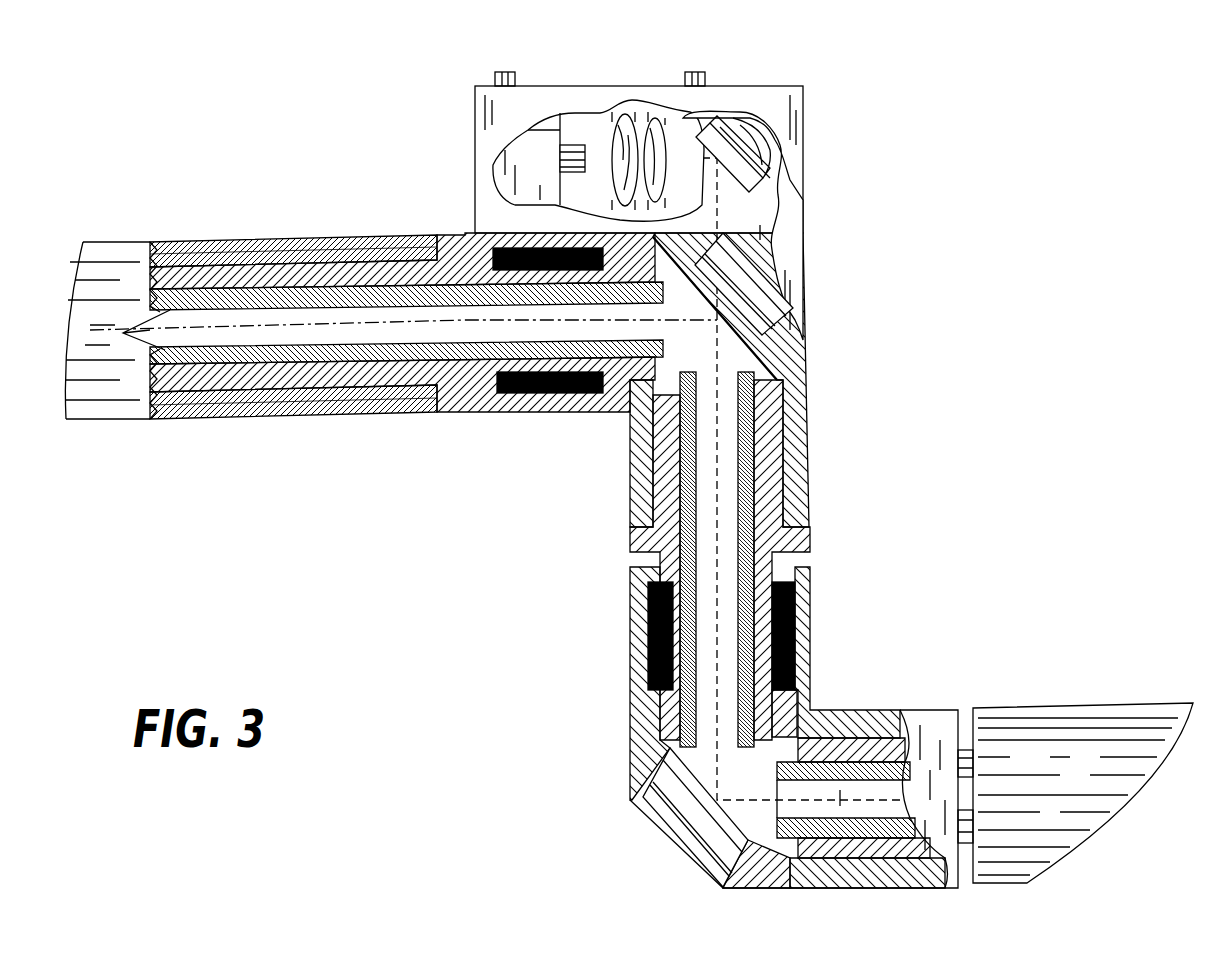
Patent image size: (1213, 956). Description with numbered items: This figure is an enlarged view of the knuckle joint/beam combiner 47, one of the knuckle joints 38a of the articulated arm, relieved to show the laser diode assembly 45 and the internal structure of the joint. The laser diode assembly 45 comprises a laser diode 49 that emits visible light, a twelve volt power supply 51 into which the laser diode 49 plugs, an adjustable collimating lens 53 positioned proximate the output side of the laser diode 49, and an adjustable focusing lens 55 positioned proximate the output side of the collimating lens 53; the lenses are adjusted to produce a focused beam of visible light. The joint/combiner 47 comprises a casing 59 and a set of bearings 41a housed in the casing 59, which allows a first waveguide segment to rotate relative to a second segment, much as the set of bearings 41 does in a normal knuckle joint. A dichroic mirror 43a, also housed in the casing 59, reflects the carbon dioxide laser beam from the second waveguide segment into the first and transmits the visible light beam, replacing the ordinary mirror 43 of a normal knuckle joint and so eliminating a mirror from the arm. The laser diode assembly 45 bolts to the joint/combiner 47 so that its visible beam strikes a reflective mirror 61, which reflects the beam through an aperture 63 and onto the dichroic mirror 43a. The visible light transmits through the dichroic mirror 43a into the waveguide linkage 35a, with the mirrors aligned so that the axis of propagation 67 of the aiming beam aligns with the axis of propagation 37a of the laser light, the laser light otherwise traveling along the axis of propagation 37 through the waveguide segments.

The laser diode assembly 45 is at (520, 60).
The adjustable collimating lens 53 is at (630, 118).
The adjustable focusing lens 55 is at (660, 125).
The laser diode 49 is at (562, 148).
The power supply 51 is at (493, 178).
The set of bearings 41a is at (495, 252).
The mirror 61 is at (790, 180).
The aperture 63 is at (770, 296).
The dichroic mirror 43a is at (812, 346).
The casing 59 is at (795, 376).
The axis of propagation 37 is at (745, 428).
The axis of propagation of the visible light aiming beam 67 is at (752, 456).
The waveguide linkage 35a is at (368, 363).
The set of bearings 41 is at (648, 600).
The knuckle joint 38a is at (860, 676).
The axis of propagation of the laser light 37a is at (406, 390).
The knuckle joint/beam combiner 47 is at (567, 477).
The mirror 43 is at (688, 812).